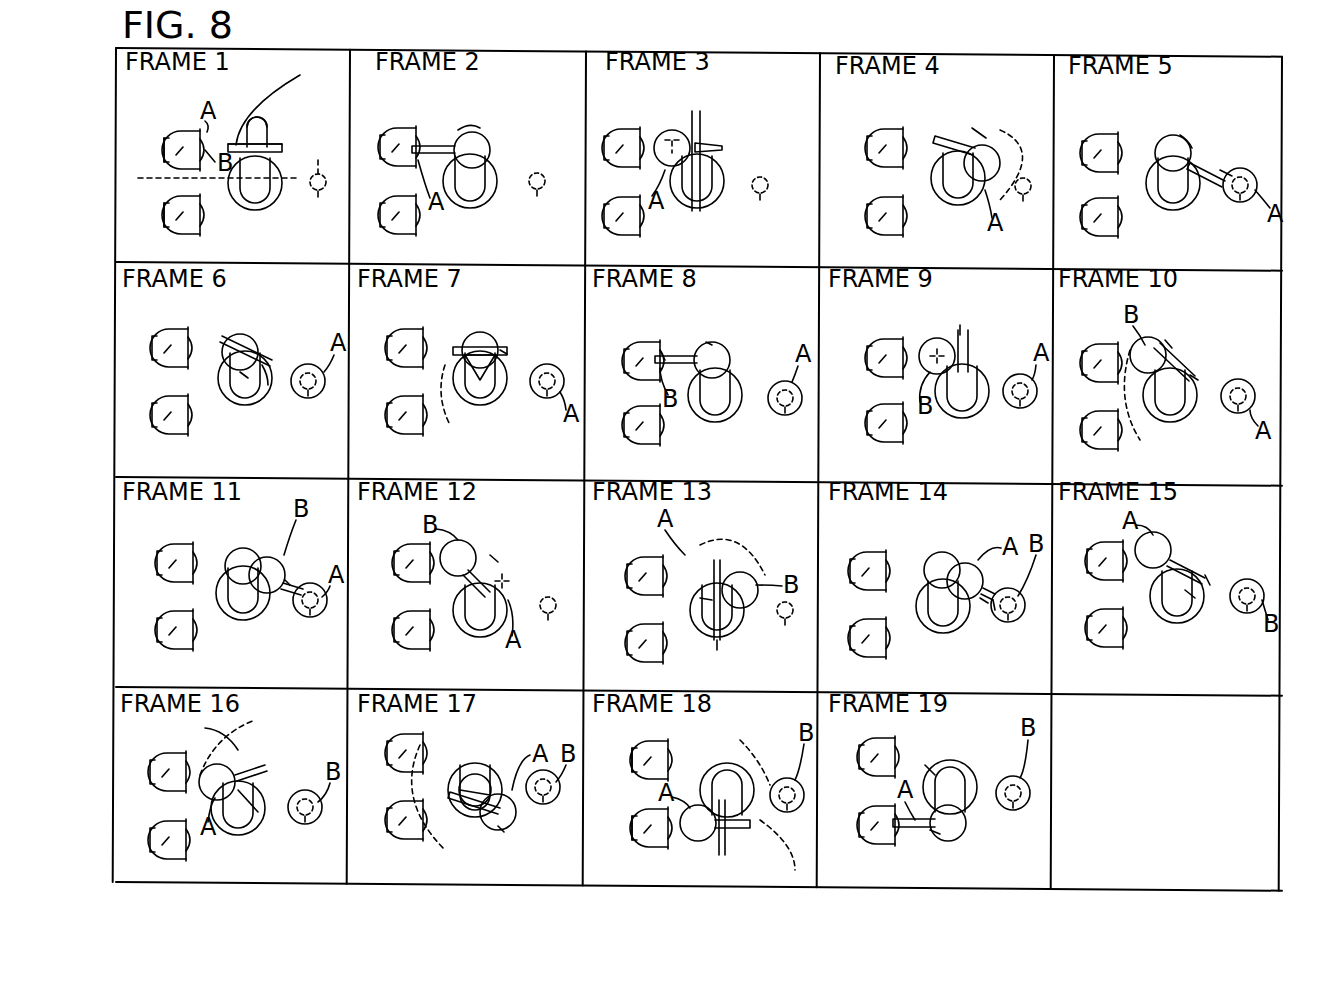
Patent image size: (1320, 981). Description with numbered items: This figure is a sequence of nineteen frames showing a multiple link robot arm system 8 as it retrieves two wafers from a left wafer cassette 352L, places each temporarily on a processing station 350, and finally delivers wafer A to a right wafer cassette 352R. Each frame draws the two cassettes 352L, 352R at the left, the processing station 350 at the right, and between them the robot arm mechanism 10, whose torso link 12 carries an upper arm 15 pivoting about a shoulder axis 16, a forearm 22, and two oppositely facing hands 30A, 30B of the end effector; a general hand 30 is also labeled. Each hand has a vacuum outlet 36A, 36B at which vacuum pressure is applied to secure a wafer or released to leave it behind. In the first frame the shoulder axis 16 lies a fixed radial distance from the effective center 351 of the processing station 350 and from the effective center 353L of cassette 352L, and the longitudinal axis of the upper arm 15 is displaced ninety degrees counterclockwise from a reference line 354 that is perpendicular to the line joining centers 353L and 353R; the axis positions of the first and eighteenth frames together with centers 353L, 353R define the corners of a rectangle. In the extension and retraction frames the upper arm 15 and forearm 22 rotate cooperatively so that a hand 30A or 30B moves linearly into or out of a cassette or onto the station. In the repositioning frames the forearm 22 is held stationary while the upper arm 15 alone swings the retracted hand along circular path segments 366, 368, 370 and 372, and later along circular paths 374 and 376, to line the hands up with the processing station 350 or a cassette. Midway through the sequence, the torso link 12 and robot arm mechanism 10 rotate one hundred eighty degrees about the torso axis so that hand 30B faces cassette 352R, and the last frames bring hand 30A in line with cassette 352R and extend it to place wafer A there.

The robot arm system 8 is at (254, 101).
The robot arm mechanism 10 is at (470, 835).
The torso link 12 is at (475, 763).
The upper arm 15 is at (270, 137).
The shoulder axis 16 is at (282, 160).
The forearm 22 is at (265, 120).
The arm 30 is at (935, 140).
The hand 30A is at (905, 872).
The hand 30B is at (283, 140).
The outlet 36A is at (668, 135).
The outlet 36B is at (930, 345).
The processing station 350 is at (783, 520).
The effective center 351 is at (320, 192).
The wafer cassette 352L is at (181, 106).
The wafer cassette 352R is at (195, 235).
The effective center 353L is at (178, 128).
The effective center 353R is at (170, 238).
The reference line 354 is at (158, 195).
The circular path segment 366 is at (1027, 165).
The circular path segment 368 is at (458, 402).
The circular path segment 370 is at (1147, 410).
The circular path segment 372 is at (753, 536).
The circular path 374 is at (258, 718).
The circular path 376 is at (790, 854).